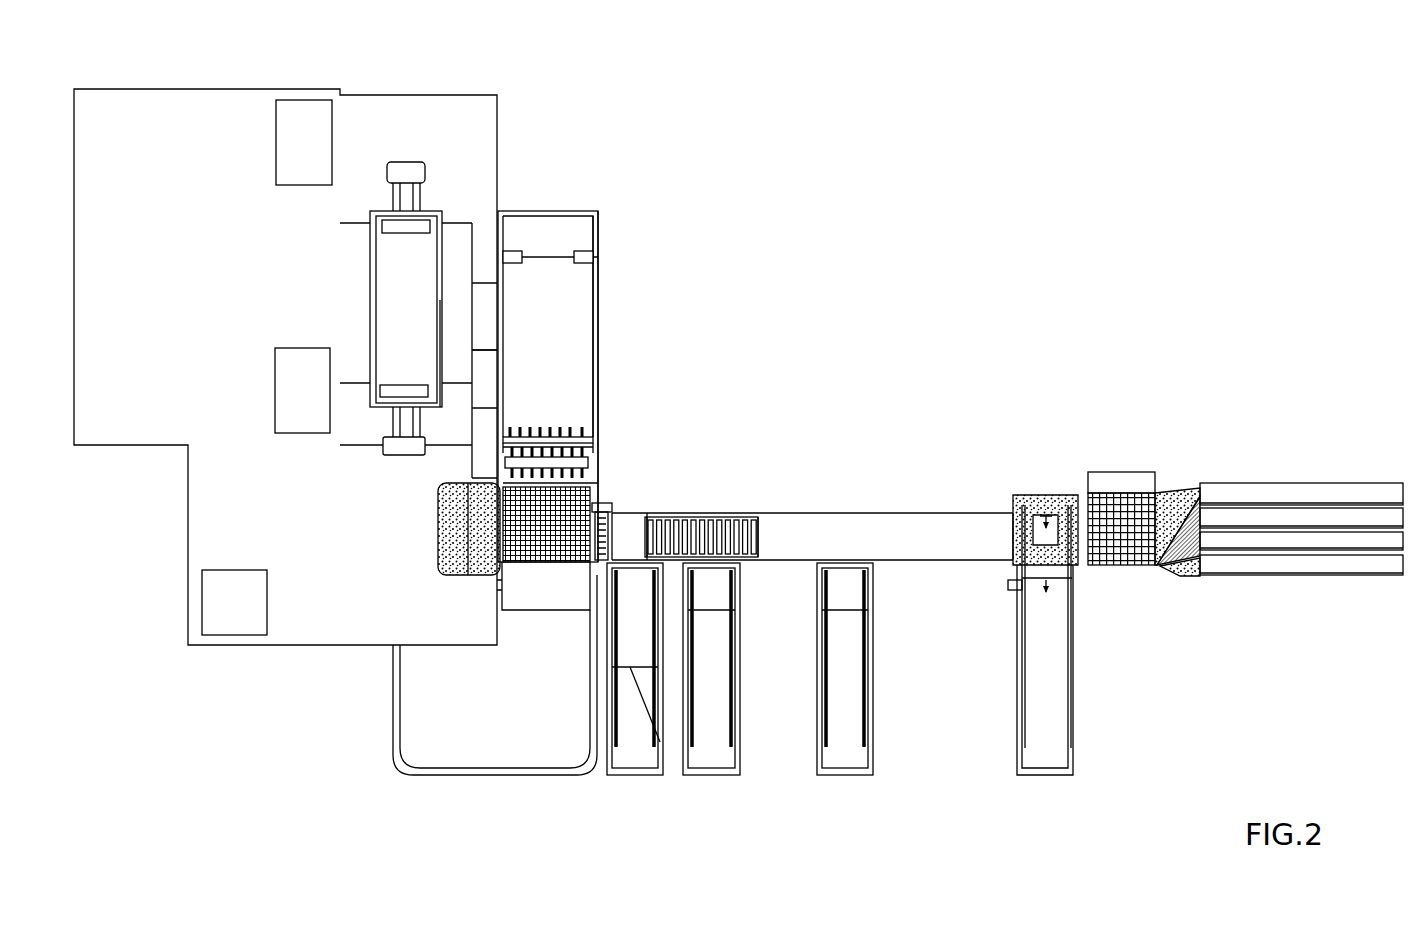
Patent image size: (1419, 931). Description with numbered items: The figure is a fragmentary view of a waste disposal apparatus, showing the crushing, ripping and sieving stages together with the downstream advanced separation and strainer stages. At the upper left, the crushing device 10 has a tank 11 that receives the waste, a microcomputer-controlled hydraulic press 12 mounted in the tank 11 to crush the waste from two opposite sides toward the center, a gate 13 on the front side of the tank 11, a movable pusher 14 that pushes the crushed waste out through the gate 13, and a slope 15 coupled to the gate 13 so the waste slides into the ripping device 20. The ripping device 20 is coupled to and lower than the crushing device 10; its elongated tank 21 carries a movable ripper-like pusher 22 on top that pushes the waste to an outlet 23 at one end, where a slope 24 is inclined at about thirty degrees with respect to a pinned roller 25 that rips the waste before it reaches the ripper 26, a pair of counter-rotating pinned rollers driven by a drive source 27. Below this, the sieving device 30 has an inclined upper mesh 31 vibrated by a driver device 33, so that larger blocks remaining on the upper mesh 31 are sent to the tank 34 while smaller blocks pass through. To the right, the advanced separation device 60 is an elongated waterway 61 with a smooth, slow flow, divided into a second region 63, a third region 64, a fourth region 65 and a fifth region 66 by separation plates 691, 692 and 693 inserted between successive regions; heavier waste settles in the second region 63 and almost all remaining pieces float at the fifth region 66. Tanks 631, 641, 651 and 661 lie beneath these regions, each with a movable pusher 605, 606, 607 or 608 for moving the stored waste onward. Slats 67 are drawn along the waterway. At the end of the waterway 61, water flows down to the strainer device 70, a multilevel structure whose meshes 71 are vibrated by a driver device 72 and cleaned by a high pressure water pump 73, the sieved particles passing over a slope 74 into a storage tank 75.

The crushing device 10 is at (413, 116).
The tank 11 is at (377, 265).
The microcomputer-controlled hydraulic press 12 is at (420, 175).
The gate 13 is at (440, 355).
The movable pusher 14 is at (385, 340).
The slope 15 is at (480, 340).
The ripping device 20 is at (613, 241).
The tank 21 is at (598, 345).
The movable ripper-like pusher 22 is at (540, 256).
The outlet 23 is at (598, 427).
The slope 24 is at (577, 392).
The roller 25 is at (524, 430).
The ripper 26 is at (557, 460).
The drive source 27 is at (482, 440).
The sieving device 30 is at (429, 518).
The upper mesh 31 is at (513, 540).
The driver device 33 is at (452, 530).
The tank 34 is at (503, 757).
The advanced separation device 60 is at (802, 499).
The waterway 61 is at (932, 512).
The second region 63 is at (632, 538).
The third region 64 is at (703, 502).
The fourth region 65 is at (856, 538).
The fifth region 66 is at (1060, 493).
The slats 67 is at (722, 520).
The strainer device 70 is at (1136, 455).
The meshes 71 is at (1108, 540).
The driver device 72 is at (1158, 485).
The high pressure water pump 73 is at (1141, 570).
The slope 74 is at (1182, 575).
The storage tank 75 is at (1308, 495).
The movable pusher 605 is at (660, 742).
The movable pusher 606 is at (712, 612).
The movable pusher 607 is at (848, 612).
The movable pusher 608 is at (1018, 585).
The tank 631 is at (636, 757).
The tank 641 is at (723, 757).
The tank 651 is at (850, 757).
The tank 661 is at (1050, 757).
The separation plate 691 is at (648, 528).
The separation plate 692 is at (760, 540).
The separation plate 693 is at (1013, 530).